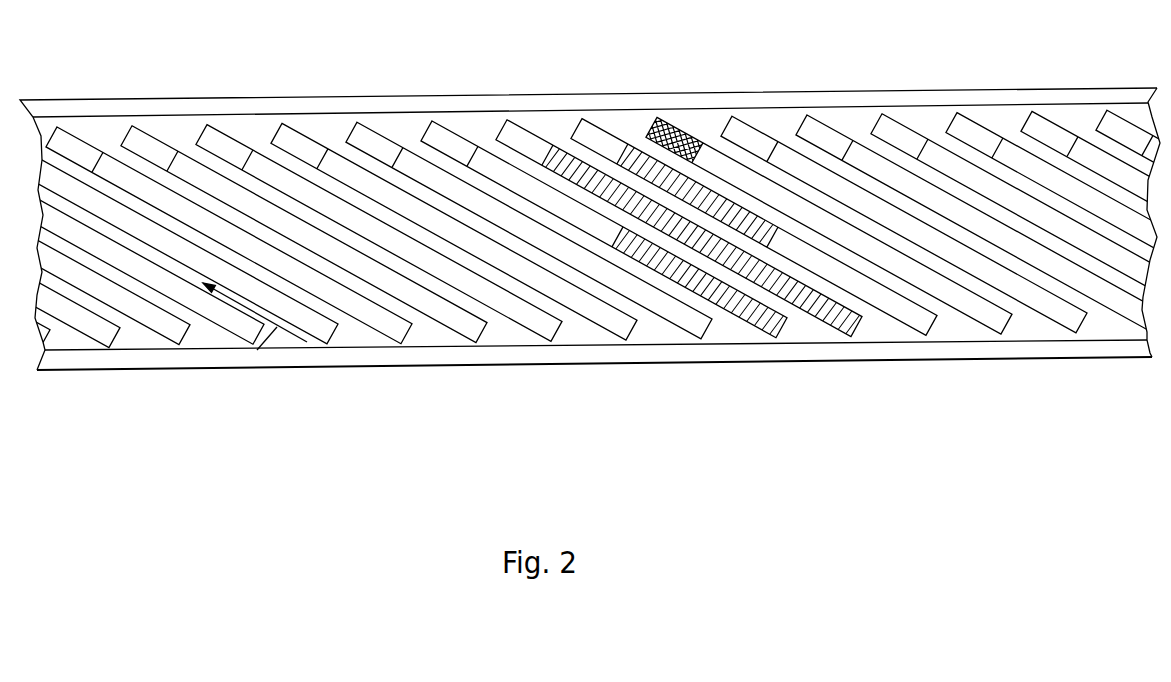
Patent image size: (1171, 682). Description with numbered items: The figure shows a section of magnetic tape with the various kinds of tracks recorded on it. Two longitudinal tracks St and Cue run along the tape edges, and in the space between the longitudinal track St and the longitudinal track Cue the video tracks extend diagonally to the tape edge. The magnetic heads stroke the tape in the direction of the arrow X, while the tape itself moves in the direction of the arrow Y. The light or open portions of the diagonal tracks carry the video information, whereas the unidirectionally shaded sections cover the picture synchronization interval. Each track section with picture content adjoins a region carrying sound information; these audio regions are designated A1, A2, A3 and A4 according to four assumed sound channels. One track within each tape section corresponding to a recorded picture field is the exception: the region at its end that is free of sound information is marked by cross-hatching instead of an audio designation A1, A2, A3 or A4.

The audio information track region A1 is at (721, 227).
The audio information track region A2 is at (683, 228).
The audio information track region A3 is at (646, 226).
The audio information track region A4 is at (608, 227).
The longitudinal track St is at (976, 88).
The longitudinal track Cue is at (956, 358).
The arrow indicating head stroking direction X is at (237, 370).
The arrow indicating tape movement direction Y is at (251, 402).